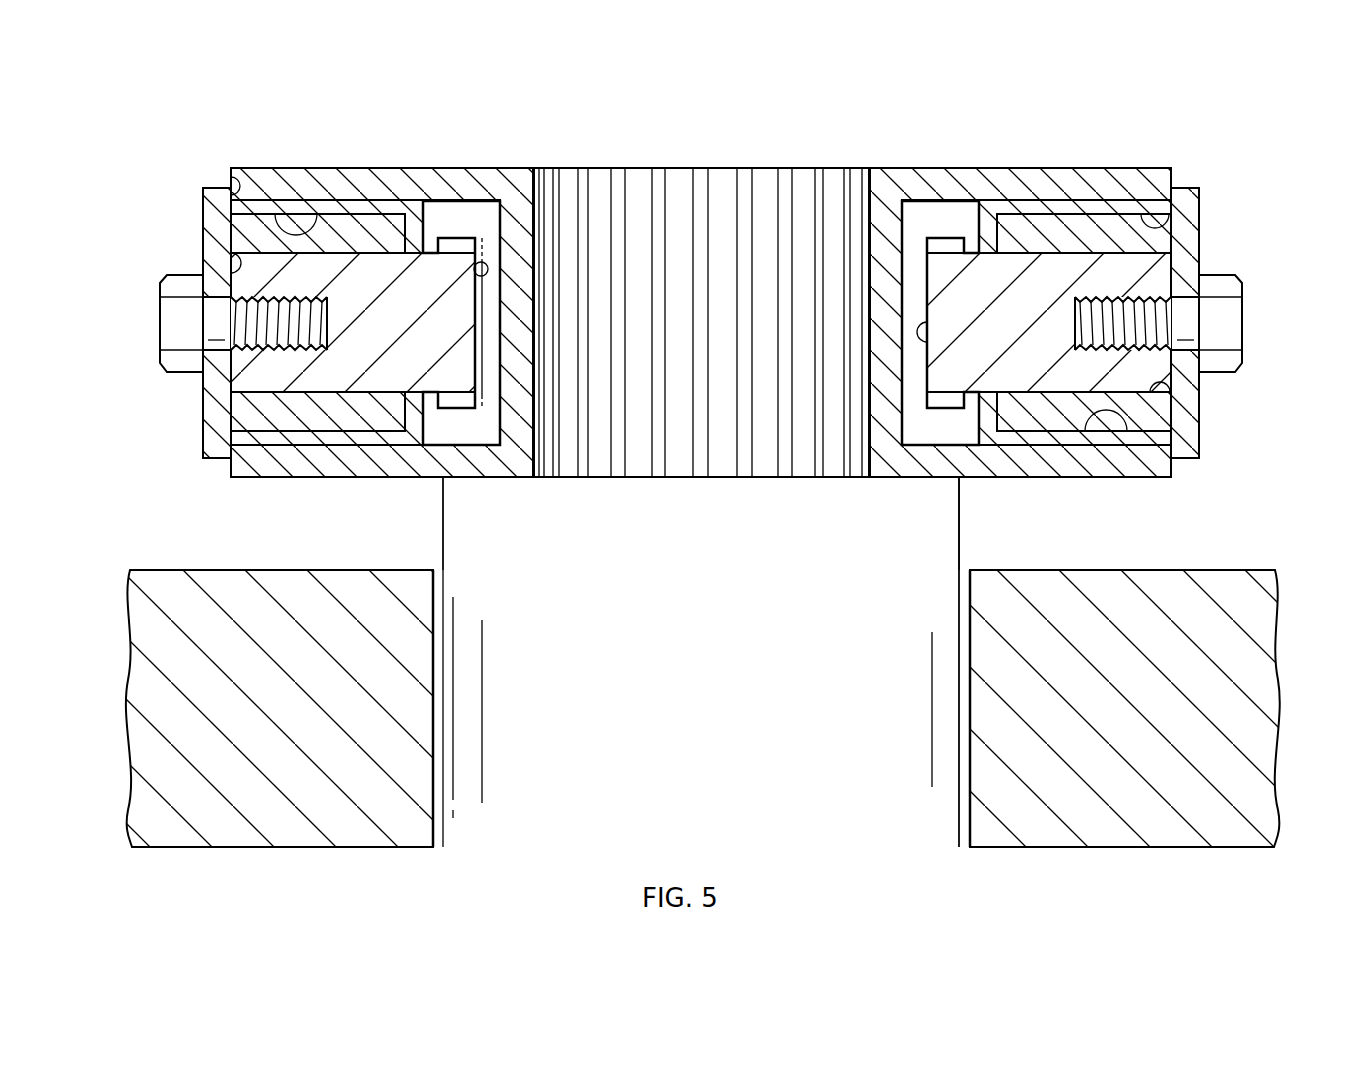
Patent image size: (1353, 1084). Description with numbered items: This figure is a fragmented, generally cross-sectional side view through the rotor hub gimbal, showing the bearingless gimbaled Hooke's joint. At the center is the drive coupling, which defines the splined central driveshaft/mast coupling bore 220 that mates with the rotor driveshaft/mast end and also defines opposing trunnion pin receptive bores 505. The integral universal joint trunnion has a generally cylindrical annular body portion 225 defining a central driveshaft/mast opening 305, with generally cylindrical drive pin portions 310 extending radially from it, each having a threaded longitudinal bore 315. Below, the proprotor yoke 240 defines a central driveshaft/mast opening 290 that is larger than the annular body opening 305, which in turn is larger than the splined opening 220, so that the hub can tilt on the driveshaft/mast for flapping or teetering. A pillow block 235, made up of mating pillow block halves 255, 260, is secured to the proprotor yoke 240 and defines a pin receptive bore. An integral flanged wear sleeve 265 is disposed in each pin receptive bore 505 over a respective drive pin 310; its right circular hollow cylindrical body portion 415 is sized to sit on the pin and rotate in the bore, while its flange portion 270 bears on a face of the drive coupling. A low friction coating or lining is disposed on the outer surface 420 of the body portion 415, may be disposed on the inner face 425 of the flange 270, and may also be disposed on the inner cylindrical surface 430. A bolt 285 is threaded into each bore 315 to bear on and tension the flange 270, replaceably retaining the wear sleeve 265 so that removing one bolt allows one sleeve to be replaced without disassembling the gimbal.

The splined central driveshaft/mast coupling bore 220 is at (725, 180).
The annular body portion 225 is at (457, 247).
The pillow block 235 is at (436, 526).
The proprotor yoke 240 is at (166, 550).
The pillow block half 255 is at (442, 150).
The pillow block half 260 is at (958, 534).
The integral flanged wear sleeve 265 is at (704, 288).
The flange portion 270 is at (212, 415).
The bolt 285 is at (162, 326).
The central driveshaft/mast opening 290 is at (860, 848).
The central driveshaft/mast opening 305 is at (474, 271).
The drive pin portion 310 is at (330, 378).
The threaded longitudinal bore 315 is at (322, 335).
The right circular hollow cylindrical body portion 415 is at (367, 227).
The outer surface 420 is at (252, 215).
The inner face 425 is at (231, 195).
The inner cylindrical surface 430 is at (250, 272).
The trunnion pin receptive bore 505 is at (318, 208).